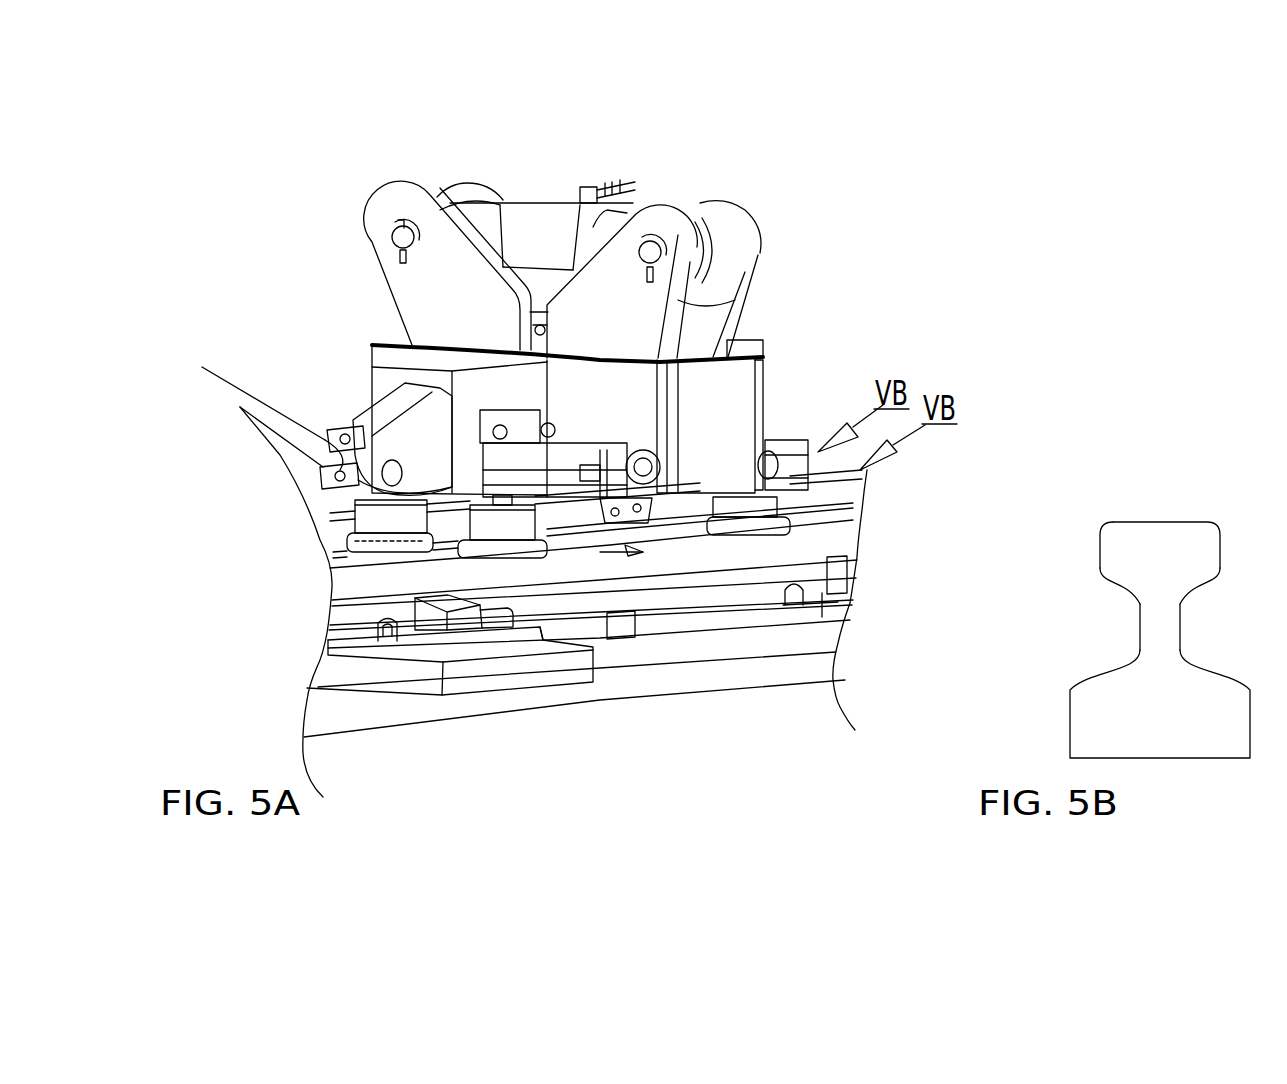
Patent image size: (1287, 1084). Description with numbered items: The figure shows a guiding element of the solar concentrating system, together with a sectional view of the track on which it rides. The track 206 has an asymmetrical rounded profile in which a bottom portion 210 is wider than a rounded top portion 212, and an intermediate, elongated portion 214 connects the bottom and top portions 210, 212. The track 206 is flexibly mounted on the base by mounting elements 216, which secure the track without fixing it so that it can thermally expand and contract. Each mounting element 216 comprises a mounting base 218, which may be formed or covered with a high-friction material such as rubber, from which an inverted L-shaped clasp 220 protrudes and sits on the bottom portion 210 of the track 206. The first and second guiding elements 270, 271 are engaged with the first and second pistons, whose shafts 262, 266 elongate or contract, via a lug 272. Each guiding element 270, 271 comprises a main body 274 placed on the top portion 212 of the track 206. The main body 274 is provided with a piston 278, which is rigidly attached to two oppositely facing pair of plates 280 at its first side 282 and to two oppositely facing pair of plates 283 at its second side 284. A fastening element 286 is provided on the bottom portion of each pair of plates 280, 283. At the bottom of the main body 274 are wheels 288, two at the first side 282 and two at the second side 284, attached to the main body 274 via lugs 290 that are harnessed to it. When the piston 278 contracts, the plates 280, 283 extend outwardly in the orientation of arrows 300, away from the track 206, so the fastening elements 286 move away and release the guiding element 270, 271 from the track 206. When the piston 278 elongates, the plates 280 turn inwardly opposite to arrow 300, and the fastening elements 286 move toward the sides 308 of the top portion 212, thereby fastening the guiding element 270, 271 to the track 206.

In FIG. 5A, the first guiding element 270 is at (250, 185).
In FIG. 5A, the second guiding element 271 is at (565, 447).
In FIG. 5A, the second side 284 is at (490, 185).
In FIG. 5A, the piston 278 is at (540, 225).
In FIG. 5A, the first side 282 is at (603, 215).
In FIG. 5A, the pair of plates 283 is at (433, 162).
In FIG. 5A, the pair of plates 280 is at (730, 220).
In FIG. 5A, the main body 274 is at (737, 417).
In FIG. 5A, the shaft 262 is at (307, 447).
In FIG. 5A, the shaft 266 is at (283, 428).
In FIG. 5A, the lug 272 is at (417, 437).
In FIG. 5A, the lugs 290 is at (585, 443).
In FIG. 5A, the track 206 is at (318, 532).
In FIG. 5A, the wheel 288 is at (390, 527).
In FIG. 5A, the arrows 300 is at (591, 568).
In FIG. 5A, the mounting elements 216 is at (553, 698).
In FIG. 5A, the fastening element 286 is at (630, 512).
In FIG. 5A, the inverted L-shaped clasp 220 is at (448, 607).
In FIG. 5A, the mounting base 218 is at (497, 670).
In FIG. 5B, the sides 308 is at (1100, 555).
In FIG. 5B, the rounded top portion 212 is at (1131, 537).
In FIG. 5B, the intermediate, elongated portion 214 is at (1140, 632).
In FIG. 5B, the bottom portion 210 is at (1070, 711).